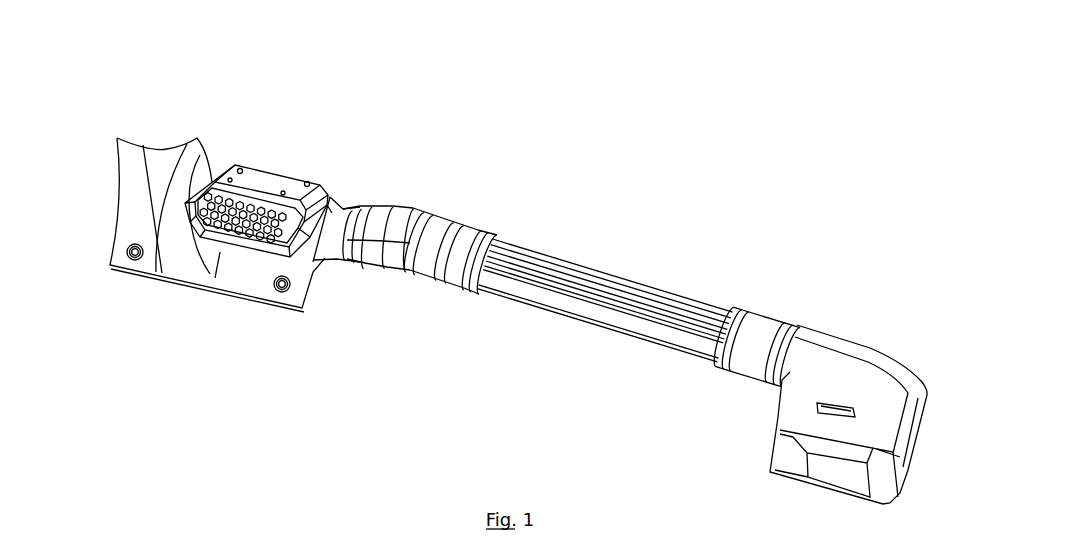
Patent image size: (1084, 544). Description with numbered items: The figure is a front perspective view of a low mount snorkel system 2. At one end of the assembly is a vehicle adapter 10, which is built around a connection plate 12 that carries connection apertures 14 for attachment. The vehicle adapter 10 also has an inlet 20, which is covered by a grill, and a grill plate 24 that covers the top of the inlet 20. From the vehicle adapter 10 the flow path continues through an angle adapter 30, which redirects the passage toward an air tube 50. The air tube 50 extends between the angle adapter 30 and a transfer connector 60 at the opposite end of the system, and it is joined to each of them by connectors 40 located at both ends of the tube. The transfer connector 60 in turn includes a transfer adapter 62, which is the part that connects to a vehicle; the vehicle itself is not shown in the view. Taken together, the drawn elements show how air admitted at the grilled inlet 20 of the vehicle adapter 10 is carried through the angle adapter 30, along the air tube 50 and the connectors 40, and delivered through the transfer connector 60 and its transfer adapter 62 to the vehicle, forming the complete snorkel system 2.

The snorkel system 2 is at (693, 98).
The vehicle adapter 10 is at (318, 115).
The connection plate 12 is at (159, 162).
The connection apertures 14 is at (277, 290).
The inlet 20 is at (303, 273).
The grill plate 24 is at (254, 182).
The angle adapter 30 is at (420, 198).
The connectors 40 is at (472, 228).
The air tube 50 is at (601, 268).
The transfer connector 60 is at (864, 310).
The transfer adapter 62 is at (816, 408).